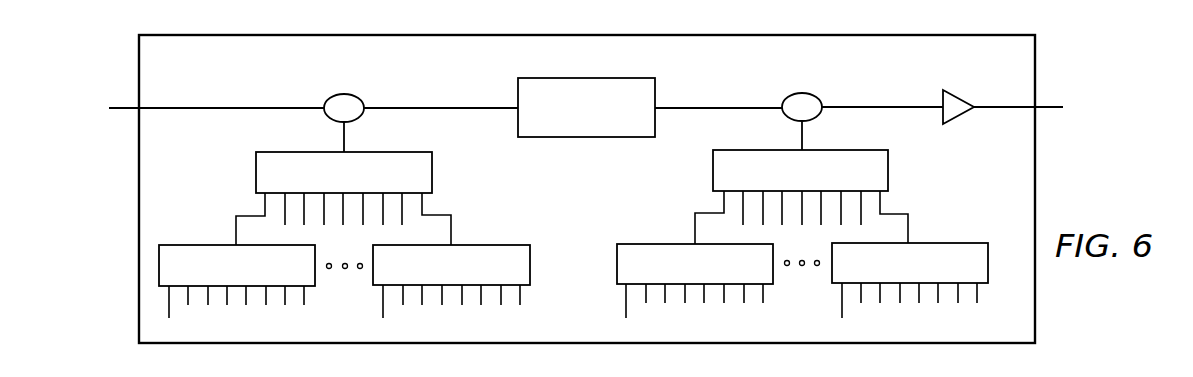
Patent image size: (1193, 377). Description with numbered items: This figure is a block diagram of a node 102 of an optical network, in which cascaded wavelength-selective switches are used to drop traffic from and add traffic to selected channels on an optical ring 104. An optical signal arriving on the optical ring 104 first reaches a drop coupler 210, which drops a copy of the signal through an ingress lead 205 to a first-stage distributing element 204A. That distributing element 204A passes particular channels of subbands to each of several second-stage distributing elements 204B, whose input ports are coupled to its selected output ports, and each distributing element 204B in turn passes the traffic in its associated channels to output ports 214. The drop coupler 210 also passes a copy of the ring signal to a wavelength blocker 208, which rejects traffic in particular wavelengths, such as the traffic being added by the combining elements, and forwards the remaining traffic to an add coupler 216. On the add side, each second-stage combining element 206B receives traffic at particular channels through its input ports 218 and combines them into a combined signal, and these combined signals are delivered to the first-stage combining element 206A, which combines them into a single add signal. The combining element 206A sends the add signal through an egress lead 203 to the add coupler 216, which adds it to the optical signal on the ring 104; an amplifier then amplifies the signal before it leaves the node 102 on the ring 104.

The node 102 is at (133, 218).
The optical ring 104 is at (1057, 107).
The egress lead 203 is at (806, 140).
The distributing element 204A is at (367, 184).
The distributing elements 204B is at (261, 277).
The ingress lead 205 is at (342, 147).
The combining element 206A is at (825, 181).
The combining elements 206B is at (719, 276).
The wavelength blocker 208 is at (587, 138).
The drop coupler 210 is at (335, 93).
The output ports 214 is at (169, 308).
The add coupler 216 is at (810, 92).
The input ports 218 is at (695, 231).